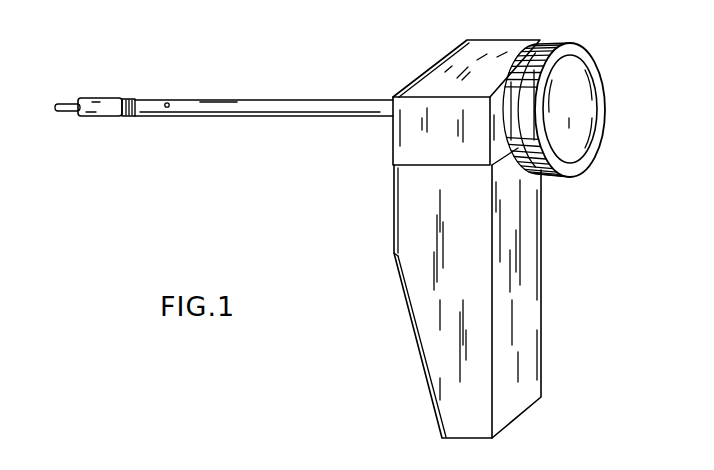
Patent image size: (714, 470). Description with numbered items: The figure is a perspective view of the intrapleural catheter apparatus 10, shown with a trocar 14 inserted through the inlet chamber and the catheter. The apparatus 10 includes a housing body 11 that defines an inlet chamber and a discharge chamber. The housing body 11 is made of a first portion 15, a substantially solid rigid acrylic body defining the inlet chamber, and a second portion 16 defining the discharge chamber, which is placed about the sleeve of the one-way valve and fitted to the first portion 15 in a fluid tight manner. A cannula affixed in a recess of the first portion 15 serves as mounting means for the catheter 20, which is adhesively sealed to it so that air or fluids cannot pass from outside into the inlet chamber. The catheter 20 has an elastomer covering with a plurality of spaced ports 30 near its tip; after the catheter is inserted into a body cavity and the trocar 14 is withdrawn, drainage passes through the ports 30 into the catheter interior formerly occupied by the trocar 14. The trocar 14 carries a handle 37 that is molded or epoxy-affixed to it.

The intrapleural catheter apparatus 10 is at (385, 221).
The housing body 11 is at (393, 186).
The trocar 14 is at (73, 102).
The first portion of housing body 15 is at (498, 40).
The second portion of housing body 16 is at (543, 263).
The catheter 20 is at (279, 100).
The ports 30 is at (165, 102).
The handle 37 is at (566, 42).